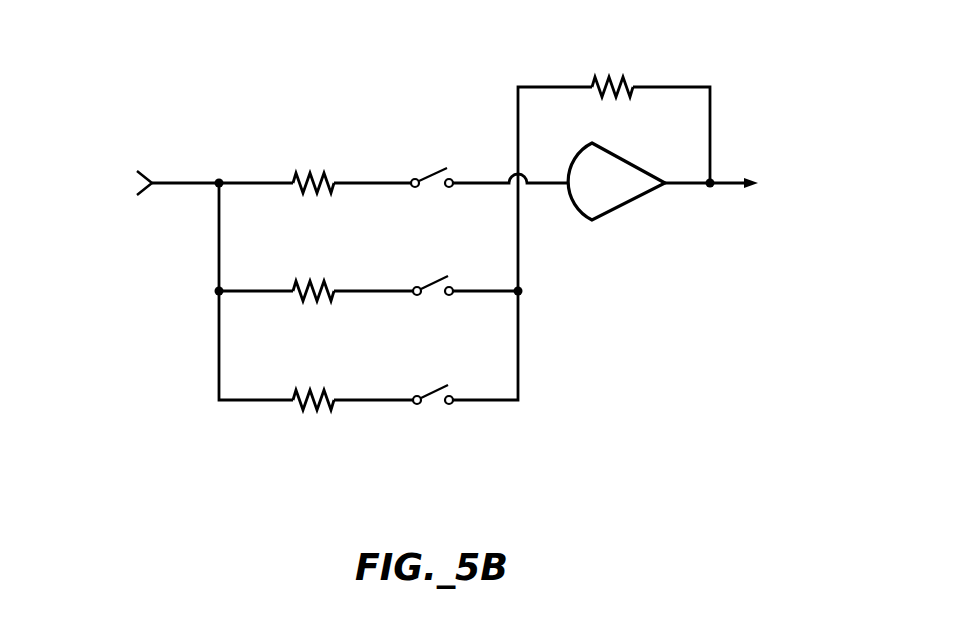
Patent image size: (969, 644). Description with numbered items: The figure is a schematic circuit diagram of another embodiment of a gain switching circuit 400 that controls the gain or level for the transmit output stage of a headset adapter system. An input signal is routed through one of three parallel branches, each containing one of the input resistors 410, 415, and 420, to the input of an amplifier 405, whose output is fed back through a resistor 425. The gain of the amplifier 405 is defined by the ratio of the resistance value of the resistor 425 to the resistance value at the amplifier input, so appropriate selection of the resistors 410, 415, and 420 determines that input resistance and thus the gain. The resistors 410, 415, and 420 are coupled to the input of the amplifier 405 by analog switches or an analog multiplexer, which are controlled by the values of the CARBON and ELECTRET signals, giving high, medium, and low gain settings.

The gain switching circuit 400 is at (725, 62).
The amplifier 405 is at (625, 206).
The input resistor 410 is at (293, 180).
The input resistor 415 is at (293, 288).
The input resistor 420 is at (293, 397).
The resistor 425 is at (592, 84).